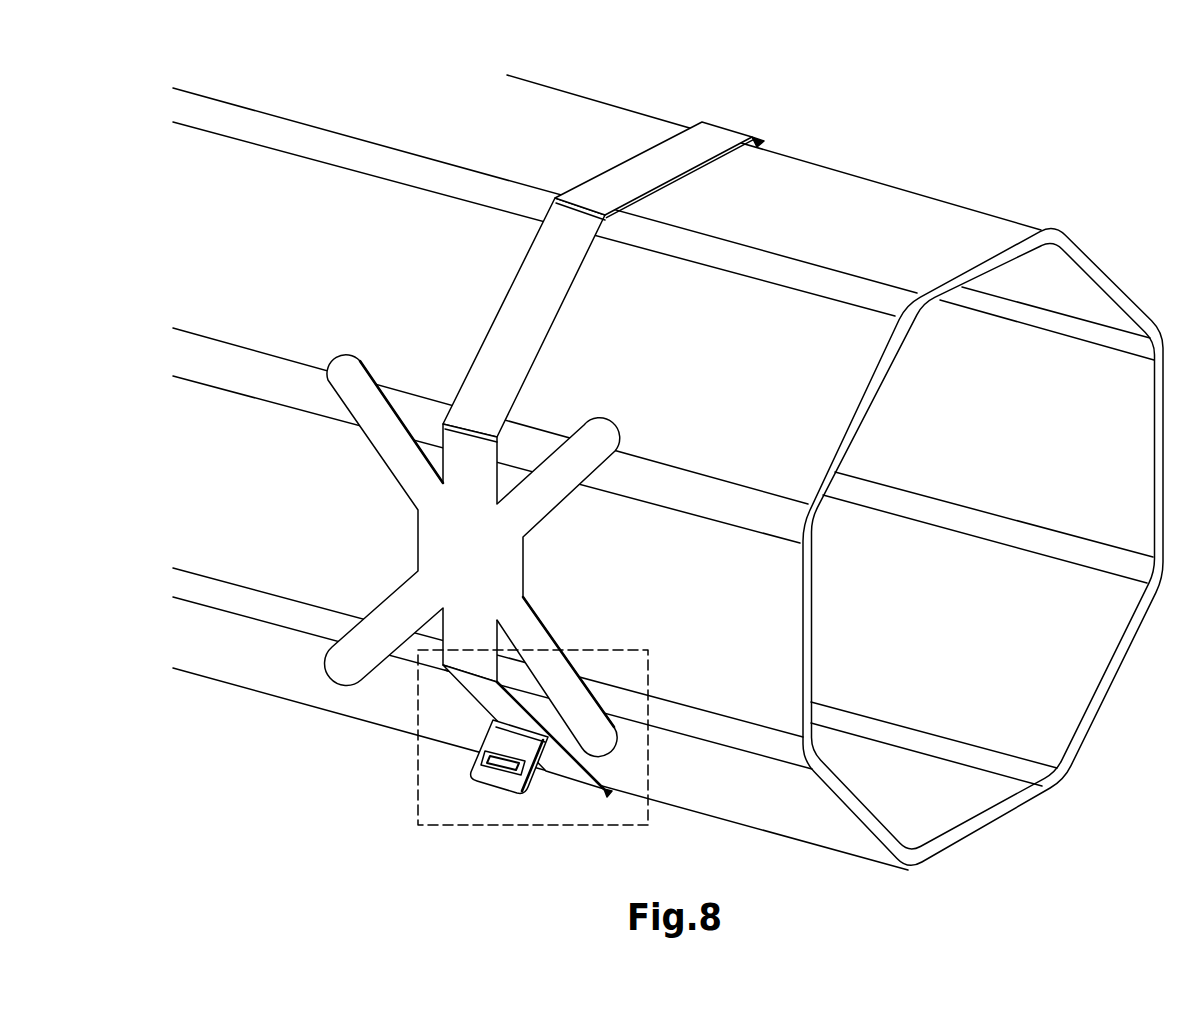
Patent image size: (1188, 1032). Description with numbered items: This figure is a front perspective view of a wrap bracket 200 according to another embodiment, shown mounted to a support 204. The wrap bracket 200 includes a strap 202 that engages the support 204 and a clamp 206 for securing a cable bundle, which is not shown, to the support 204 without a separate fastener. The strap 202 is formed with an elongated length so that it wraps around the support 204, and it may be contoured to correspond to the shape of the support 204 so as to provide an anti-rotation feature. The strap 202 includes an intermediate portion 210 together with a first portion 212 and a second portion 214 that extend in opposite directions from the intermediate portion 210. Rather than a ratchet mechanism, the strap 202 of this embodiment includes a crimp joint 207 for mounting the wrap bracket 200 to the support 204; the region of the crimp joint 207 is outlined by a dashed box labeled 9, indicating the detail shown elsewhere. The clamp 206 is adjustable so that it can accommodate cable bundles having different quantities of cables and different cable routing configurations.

The wrap bracket 200 is at (506, 467).
The strap 202 is at (565, 350).
The support 204 is at (912, 232).
The clamp 206 is at (455, 538).
The crimp joint 207 is at (405, 833).
The intermediate portion 210 is at (468, 458).
The first portion 212 is at (708, 137).
The second portion 214 is at (485, 694).
The detail region of FIG. 9 is at (417, 783).